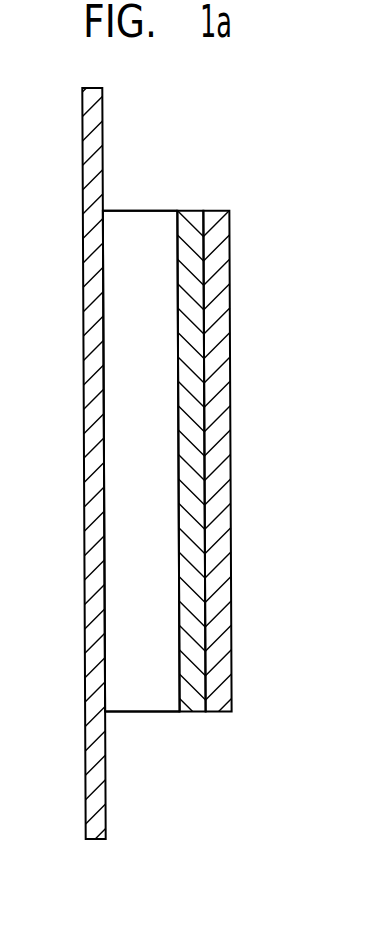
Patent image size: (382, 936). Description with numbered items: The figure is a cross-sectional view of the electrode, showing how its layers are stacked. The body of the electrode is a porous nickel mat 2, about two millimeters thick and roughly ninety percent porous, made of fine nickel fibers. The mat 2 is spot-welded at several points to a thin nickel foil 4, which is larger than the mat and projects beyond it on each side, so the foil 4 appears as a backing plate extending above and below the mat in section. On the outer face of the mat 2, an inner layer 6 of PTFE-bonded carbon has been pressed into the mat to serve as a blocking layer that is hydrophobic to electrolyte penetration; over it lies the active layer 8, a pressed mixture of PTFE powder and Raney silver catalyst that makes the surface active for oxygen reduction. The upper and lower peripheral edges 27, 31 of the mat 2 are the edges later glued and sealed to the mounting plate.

The nickel mat 2 is at (148, 418).
The nickel foil 4 is at (82, 181).
The inner layer 6 is at (188, 702).
The active layer 8 is at (217, 278).
The peripheral edge 27 is at (138, 210).
The peripheral edge 31 is at (137, 713).